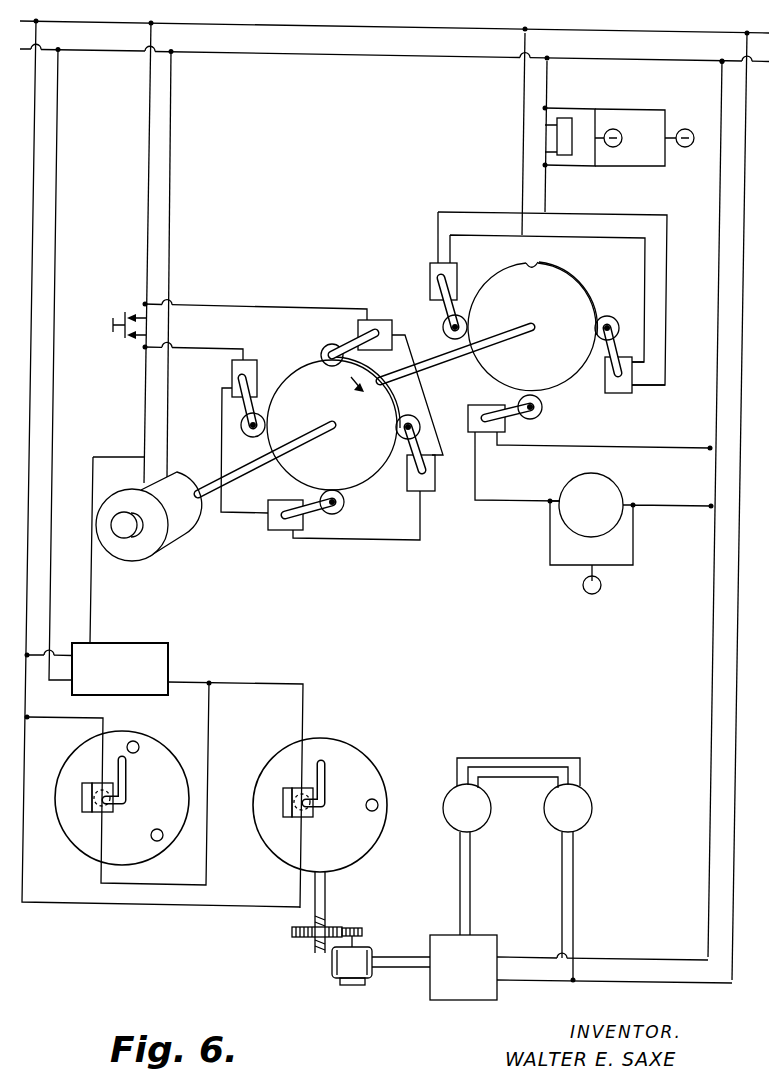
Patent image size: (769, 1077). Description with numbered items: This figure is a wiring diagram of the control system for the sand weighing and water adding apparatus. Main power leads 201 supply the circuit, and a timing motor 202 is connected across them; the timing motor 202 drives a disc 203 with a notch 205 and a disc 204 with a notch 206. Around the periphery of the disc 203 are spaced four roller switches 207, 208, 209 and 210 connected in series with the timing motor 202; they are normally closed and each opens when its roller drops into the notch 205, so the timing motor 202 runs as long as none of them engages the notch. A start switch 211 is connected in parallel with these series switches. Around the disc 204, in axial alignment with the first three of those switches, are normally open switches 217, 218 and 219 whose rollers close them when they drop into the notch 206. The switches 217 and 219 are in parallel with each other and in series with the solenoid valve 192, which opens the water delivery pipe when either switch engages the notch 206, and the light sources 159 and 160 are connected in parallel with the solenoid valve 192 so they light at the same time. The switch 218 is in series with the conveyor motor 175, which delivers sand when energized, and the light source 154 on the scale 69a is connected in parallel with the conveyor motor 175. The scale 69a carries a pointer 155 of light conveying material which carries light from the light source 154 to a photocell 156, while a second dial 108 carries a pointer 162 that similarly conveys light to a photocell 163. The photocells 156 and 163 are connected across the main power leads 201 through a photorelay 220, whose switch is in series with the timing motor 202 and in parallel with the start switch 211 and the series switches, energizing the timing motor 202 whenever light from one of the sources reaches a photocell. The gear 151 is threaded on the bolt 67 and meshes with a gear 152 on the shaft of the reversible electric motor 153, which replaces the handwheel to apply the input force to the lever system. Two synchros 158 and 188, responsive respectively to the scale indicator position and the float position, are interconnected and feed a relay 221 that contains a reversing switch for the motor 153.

The main power leads 201 is at (297, 26).
The solenoid valve 192 is at (572, 152).
The light source 159 is at (614, 128).
The light source 160 is at (686, 129).
The disc 204 is at (563, 372).
The notch 206 is at (537, 263).
The switch 219 is at (432, 276).
The switch 217 is at (622, 393).
The switch 218 is at (490, 433).
The disc 203 is at (364, 472).
The notch 205 is at (324, 355).
The switch 210 is at (386, 320).
The switch 209 is at (232, 370).
The switch 207 is at (433, 491).
The switch 208 is at (285, 530).
The start switch 211 is at (120, 340).
The timing motor 202 is at (160, 545).
The conveyor motor 175 is at (620, 490).
The light source 154 is at (592, 595).
The photorelay 220 is at (175, 658).
The timing disc 108 is at (63, 768).
The pointer 162 is at (128, 781).
The photocell 163 is at (90, 814).
The scale 69a is at (272, 760).
The pointer 155 is at (326, 778).
The photocell 156 is at (295, 818).
The bolt 67 is at (326, 905).
The gear 151 is at (302, 938).
The gear 152 is at (363, 931).
The reversible electric motor 153 is at (350, 980).
The synchro 188 is at (487, 822).
The synchro 158 is at (587, 822).
The relay 221 is at (487, 940).